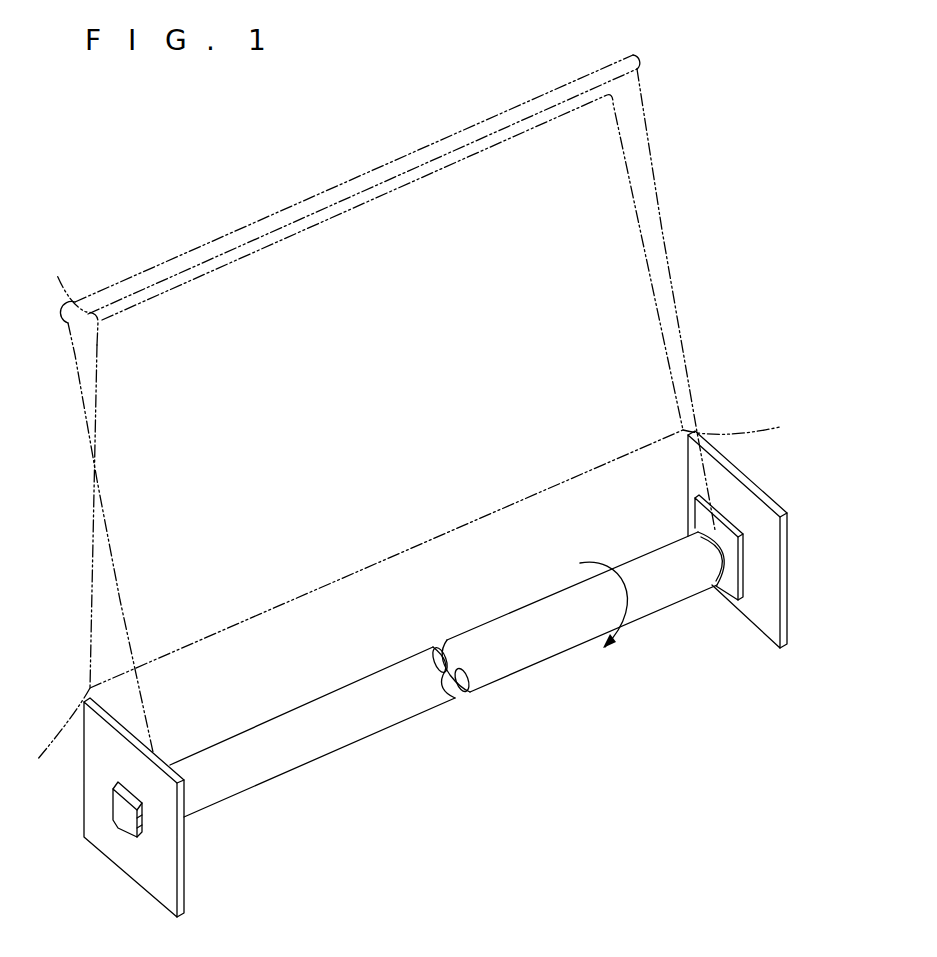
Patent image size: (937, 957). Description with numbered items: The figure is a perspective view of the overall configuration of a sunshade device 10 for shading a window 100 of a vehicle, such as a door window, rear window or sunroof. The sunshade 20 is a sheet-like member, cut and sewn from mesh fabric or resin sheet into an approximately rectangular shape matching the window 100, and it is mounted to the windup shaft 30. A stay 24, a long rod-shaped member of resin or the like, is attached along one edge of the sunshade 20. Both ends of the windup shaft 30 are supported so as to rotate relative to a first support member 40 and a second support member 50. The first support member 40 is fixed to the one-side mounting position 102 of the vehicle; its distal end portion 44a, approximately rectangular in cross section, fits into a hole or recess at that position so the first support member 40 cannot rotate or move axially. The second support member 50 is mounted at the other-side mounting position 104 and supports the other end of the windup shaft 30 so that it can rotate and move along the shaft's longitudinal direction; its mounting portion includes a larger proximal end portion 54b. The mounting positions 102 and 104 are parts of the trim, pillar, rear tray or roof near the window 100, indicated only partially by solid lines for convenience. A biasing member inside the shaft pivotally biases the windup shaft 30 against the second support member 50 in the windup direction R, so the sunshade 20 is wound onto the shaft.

The sunshade device 10 is at (446, 492).
The sunshade 20 is at (663, 225).
The stay 24 is at (195, 250).
The windup shaft 30 is at (507, 677).
The first support member 40 is at (103, 856).
The distal end portion 44a is at (122, 830).
The second support member 50 is at (766, 525).
The proximal end portion 54b is at (730, 520).
The window 100 is at (408, 407).
The one-side mounting position 102 is at (160, 847).
The other-side mounting position 104 is at (762, 580).
The windup direction R is at (612, 617).